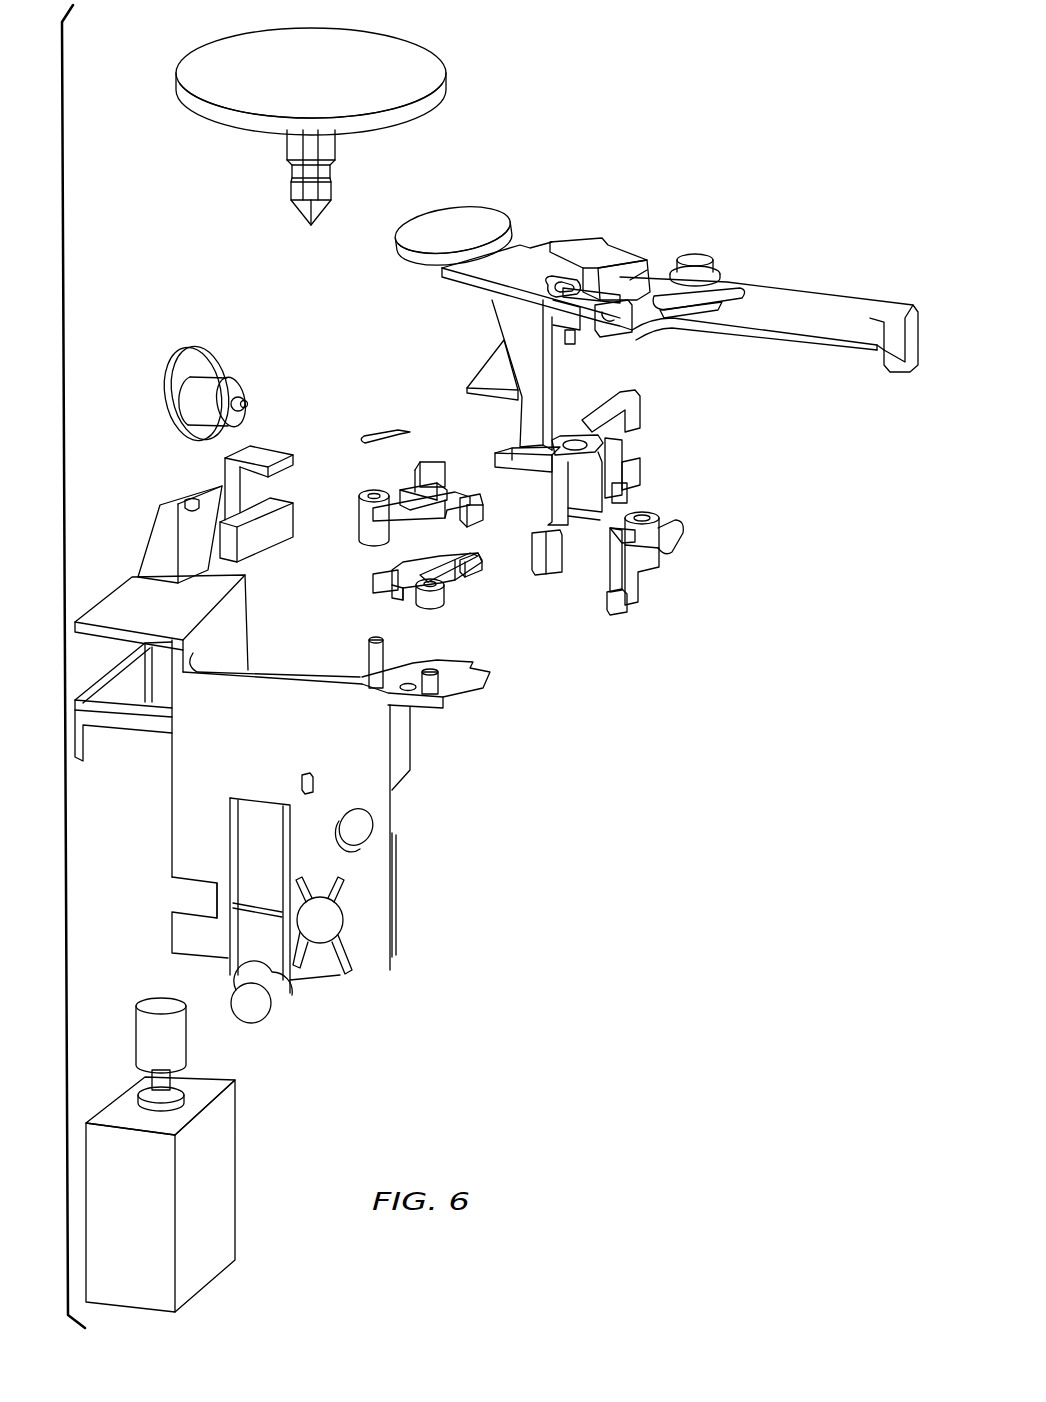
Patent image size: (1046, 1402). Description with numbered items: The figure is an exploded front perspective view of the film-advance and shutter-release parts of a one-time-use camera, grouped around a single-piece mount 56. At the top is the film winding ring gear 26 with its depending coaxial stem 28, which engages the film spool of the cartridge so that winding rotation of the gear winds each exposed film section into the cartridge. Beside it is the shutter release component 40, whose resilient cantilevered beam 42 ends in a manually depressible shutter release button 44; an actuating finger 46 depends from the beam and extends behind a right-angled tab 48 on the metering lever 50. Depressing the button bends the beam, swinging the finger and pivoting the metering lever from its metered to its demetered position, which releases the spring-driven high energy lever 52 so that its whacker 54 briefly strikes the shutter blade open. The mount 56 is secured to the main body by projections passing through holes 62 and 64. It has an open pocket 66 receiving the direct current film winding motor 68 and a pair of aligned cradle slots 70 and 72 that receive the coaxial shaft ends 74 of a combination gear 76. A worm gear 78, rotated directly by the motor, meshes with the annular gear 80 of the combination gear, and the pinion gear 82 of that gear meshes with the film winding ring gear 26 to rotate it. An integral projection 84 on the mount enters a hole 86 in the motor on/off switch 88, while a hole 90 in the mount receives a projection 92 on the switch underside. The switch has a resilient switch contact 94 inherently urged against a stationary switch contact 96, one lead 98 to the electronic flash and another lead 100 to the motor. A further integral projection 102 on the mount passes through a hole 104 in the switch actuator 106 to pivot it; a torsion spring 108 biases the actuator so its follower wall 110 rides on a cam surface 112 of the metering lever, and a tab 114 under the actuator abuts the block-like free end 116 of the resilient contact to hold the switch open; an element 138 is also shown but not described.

The film winding ring gear 26 is at (212, 115).
The coaxial stem 28 is at (290, 186).
The shutter release component 40 is at (580, 246).
The resilient cantilevered beam 42 is at (603, 270).
The shutter release button 44 is at (465, 222).
The actuating finger 46 is at (508, 322).
The right-angled tab 48 is at (548, 567).
The metering lever 50 is at (620, 504).
The high energy lever 52 is at (668, 586).
The whacker 54 is at (612, 607).
The mount 56 is at (301, 799).
The hole 62 is at (373, 817).
The hole 64 is at (322, 923).
The open pocket 66 is at (125, 690).
The film winding motor 68 is at (232, 1135).
The cradle slot 70 is at (187, 497).
The cradle slot 72 is at (245, 520).
The coaxial shaft end 74 is at (240, 399).
The combination gear 76 is at (162, 396).
The worm gear 78 is at (187, 1035).
The annular gear 80 is at (192, 356).
The pinion gear 82 is at (217, 380).
The integral projection 84 is at (470, 687).
The hole 86 is at (434, 578).
The motor on/off switch 88 is at (416, 589).
The hole 90 is at (410, 693).
The projection 92 is at (407, 597).
The resilient switch contact 94 is at (428, 575).
The stationary switch contact 96 is at (453, 573).
The lead 98 is at (375, 580).
The lead 100 is at (400, 600).
The integral projection 102 is at (372, 662).
The hole 104 is at (370, 494).
The switch actuator 106 is at (414, 474).
The torsion spring 108 is at (387, 438).
The follower wall 110 is at (433, 462).
The cam surface 112 is at (502, 452).
The tab 114 is at (476, 515).
The block-like free end 116 is at (477, 573).
The wedge 138 is at (405, 498).